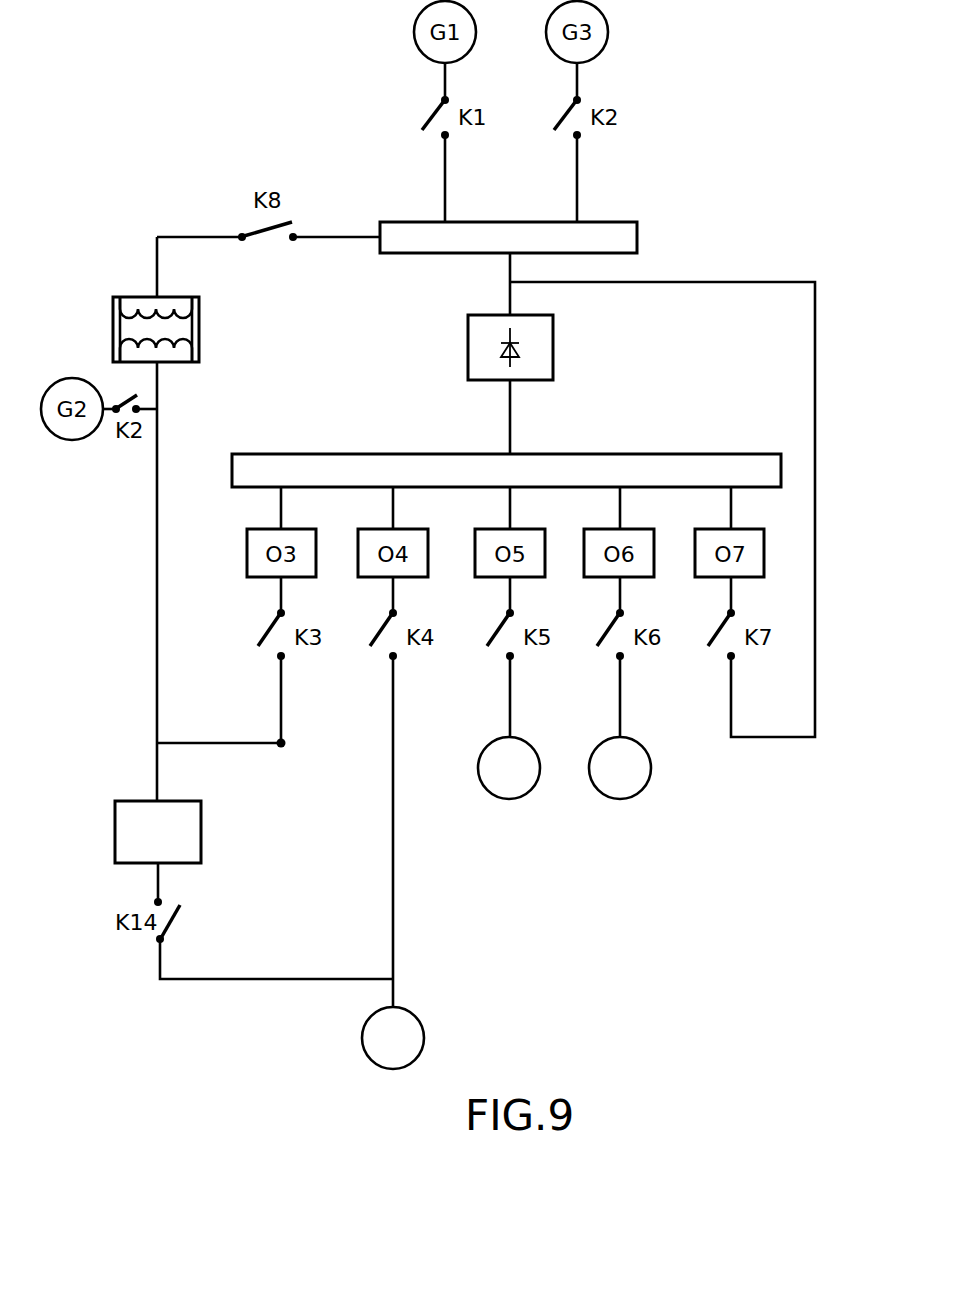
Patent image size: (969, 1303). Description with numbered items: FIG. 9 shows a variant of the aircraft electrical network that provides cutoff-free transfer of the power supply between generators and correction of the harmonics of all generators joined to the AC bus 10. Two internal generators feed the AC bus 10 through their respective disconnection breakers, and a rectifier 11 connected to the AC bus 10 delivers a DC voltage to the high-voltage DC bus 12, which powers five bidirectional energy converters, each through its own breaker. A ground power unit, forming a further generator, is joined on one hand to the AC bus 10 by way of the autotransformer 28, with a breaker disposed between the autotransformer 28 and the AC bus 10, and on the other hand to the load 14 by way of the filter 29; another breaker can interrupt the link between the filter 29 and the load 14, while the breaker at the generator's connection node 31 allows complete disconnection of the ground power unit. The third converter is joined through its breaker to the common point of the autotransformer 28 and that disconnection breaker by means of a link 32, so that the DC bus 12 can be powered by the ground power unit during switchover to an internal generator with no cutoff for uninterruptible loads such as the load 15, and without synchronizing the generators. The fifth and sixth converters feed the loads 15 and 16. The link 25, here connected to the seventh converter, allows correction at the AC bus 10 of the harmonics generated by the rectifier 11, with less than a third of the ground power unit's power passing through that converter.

The AC bus 10 is at (637, 235).
The rectifier 11 is at (553, 354).
The high-voltage DC bus 12 is at (618, 454).
The load 14 is at (393, 862).
The load 15 is at (509, 727).
The load 16 is at (620, 727).
The link 25 is at (815, 386).
The autotransformer 28 is at (199, 335).
The filter 29 is at (201, 830).
The connection node of generator G2 31 is at (145, 410).
The link 32 is at (242, 743).